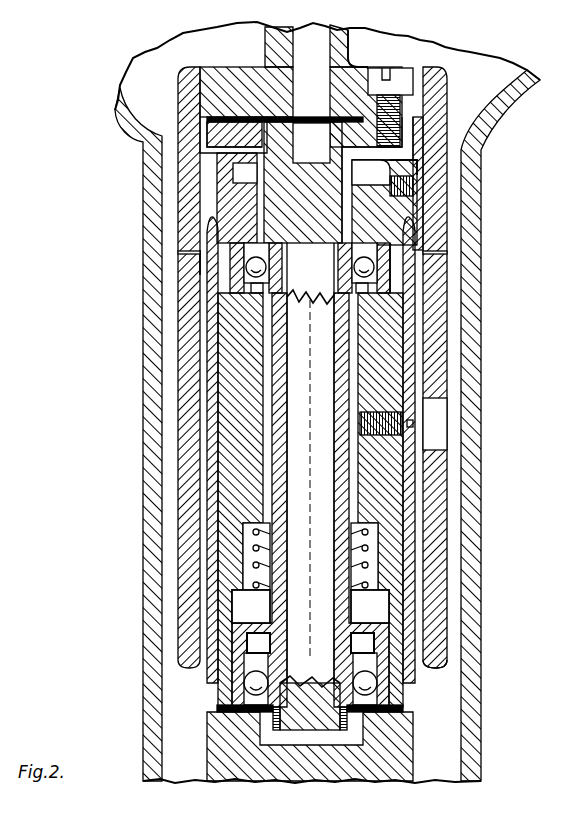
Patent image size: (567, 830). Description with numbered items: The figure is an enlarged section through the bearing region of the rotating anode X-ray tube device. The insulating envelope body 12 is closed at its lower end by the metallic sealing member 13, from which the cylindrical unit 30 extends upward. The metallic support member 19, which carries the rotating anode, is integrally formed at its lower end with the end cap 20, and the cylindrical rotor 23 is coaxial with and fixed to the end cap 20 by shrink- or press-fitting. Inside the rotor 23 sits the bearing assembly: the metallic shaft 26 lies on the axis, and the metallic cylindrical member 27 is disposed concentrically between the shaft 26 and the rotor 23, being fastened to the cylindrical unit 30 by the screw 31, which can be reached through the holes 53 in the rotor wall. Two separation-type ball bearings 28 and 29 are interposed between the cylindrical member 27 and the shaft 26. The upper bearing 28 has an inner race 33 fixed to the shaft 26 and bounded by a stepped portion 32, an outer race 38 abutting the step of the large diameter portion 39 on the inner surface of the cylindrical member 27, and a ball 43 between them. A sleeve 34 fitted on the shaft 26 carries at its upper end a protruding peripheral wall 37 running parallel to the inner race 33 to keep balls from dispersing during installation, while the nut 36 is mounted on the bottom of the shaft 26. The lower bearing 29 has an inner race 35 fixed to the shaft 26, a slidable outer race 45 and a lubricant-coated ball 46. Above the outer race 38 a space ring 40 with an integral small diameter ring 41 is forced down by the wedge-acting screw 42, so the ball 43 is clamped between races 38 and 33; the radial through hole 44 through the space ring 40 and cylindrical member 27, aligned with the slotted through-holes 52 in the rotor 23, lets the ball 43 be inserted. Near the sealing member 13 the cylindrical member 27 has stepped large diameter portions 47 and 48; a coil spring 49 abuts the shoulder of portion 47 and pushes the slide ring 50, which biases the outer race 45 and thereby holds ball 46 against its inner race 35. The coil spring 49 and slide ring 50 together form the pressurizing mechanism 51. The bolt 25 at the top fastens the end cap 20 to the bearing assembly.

The envelope body 12 is at (480, 362).
The sealing member 13 is at (242, 763).
The support member 19 is at (350, 45).
The end cap 20 is at (222, 68).
The rotor 23 is at (190, 322).
The bolt 25 is at (403, 72).
The shaft 26 is at (325, 473).
The cylindrical member 27 is at (223, 353).
The ball bearing 28 is at (311, 143).
The ball bearing 29 is at (443, 660).
The cylindrical unit 30 is at (232, 555).
The screw 31 is at (403, 435).
The stepped portion 32 is at (250, 208).
The inner race 33 is at (303, 229).
The sleeve 34 is at (273, 473).
The inner race 35 is at (283, 665).
The nut 36 is at (352, 715).
The protruding peripheral wall 37 is at (377, 267).
The outer race 38 is at (200, 262).
The large diameter portion 39 is at (235, 283).
The space ring 40 is at (243, 212).
The small diameter ring 41 is at (412, 162).
The screw 42 is at (405, 185).
The ball 43 is at (395, 265).
The through hole 44 is at (403, 213).
The outer race 45 is at (240, 683).
The ball 46 is at (372, 682).
The large diameter portion 47 is at (272, 538).
The large diameter portion 48 is at (240, 600).
The coil spring 49 is at (367, 557).
The slide ring 50 is at (362, 643).
The pressurizing mechanism 51 is at (382, 608).
The through-holes 52 is at (182, 273).
The holes 53 is at (440, 415).